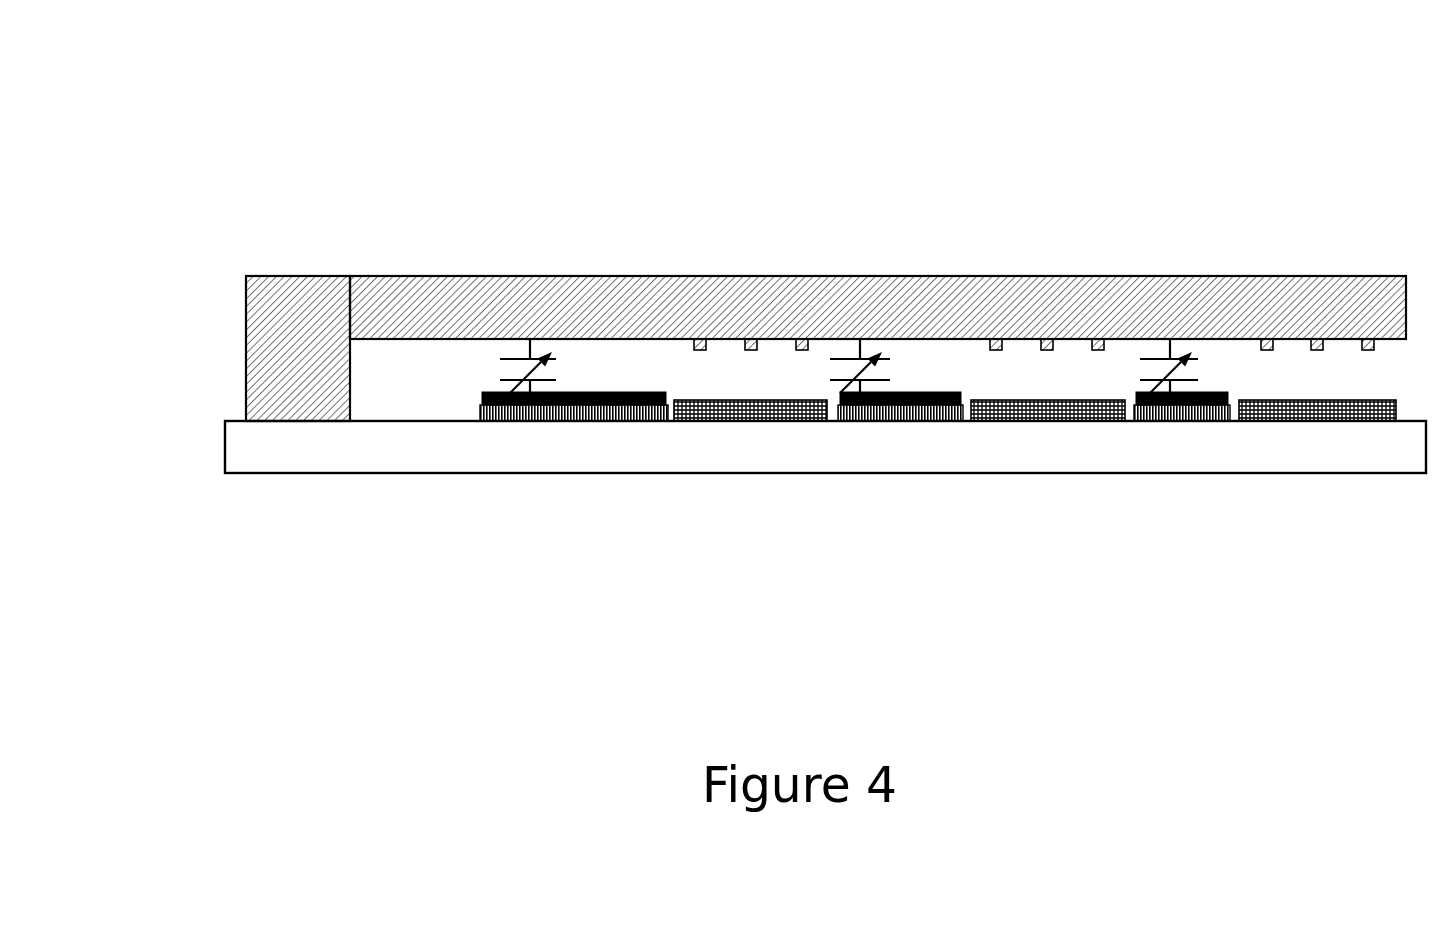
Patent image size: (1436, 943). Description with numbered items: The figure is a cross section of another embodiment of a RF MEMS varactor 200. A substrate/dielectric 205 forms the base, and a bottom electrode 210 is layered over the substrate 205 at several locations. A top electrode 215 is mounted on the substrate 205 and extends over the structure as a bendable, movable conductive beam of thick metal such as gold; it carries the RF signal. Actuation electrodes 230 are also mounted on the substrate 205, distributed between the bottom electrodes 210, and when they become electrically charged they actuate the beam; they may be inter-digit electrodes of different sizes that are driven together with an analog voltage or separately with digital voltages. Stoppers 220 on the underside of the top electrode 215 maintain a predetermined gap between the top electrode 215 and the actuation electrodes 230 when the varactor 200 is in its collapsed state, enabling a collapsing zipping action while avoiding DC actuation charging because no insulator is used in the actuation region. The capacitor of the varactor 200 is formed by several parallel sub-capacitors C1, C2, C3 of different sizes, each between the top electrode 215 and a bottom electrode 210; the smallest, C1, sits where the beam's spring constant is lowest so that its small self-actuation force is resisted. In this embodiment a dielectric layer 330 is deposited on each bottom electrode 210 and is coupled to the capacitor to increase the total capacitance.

The RF MEMS varactor 200 is at (878, 269).
The substrate/dielectric 205 is at (211, 448).
The bottom electrode 210 is at (510, 439).
The top electrode 215 is at (229, 352).
The stoppers 220 is at (788, 326).
The actuation electrodes 230 is at (1267, 424).
The dielectric layer 330 is at (476, 379).
The sub-capacitor C1 is at (1186, 366).
The sub-capacitor C2 is at (879, 366).
The sub-capacitor C3 is at (548, 366).